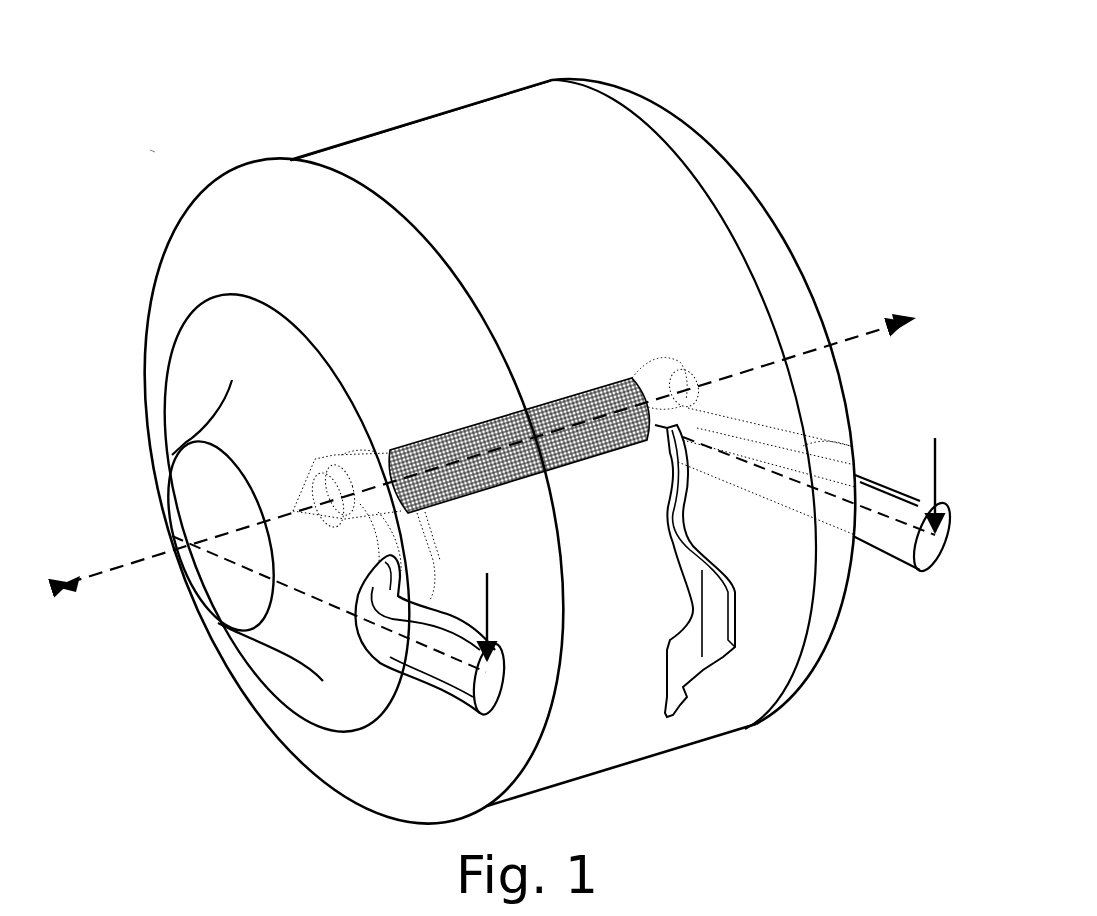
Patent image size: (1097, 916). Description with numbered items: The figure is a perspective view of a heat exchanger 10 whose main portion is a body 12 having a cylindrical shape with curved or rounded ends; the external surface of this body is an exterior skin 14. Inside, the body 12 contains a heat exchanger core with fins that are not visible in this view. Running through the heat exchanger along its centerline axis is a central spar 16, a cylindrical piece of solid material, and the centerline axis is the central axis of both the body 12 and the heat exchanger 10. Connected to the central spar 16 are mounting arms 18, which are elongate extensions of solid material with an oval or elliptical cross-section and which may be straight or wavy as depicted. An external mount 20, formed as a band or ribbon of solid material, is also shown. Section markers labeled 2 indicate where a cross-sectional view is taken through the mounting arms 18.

The heat exchanger 10 is at (148, 137).
The body 12 is at (448, 448).
The exterior skin 14 is at (569, 156).
The central spar 16 is at (452, 436).
The mounting arms 18 is at (441, 684).
The external mount 20 is at (732, 608).
The section line 2 is at (723, 546).